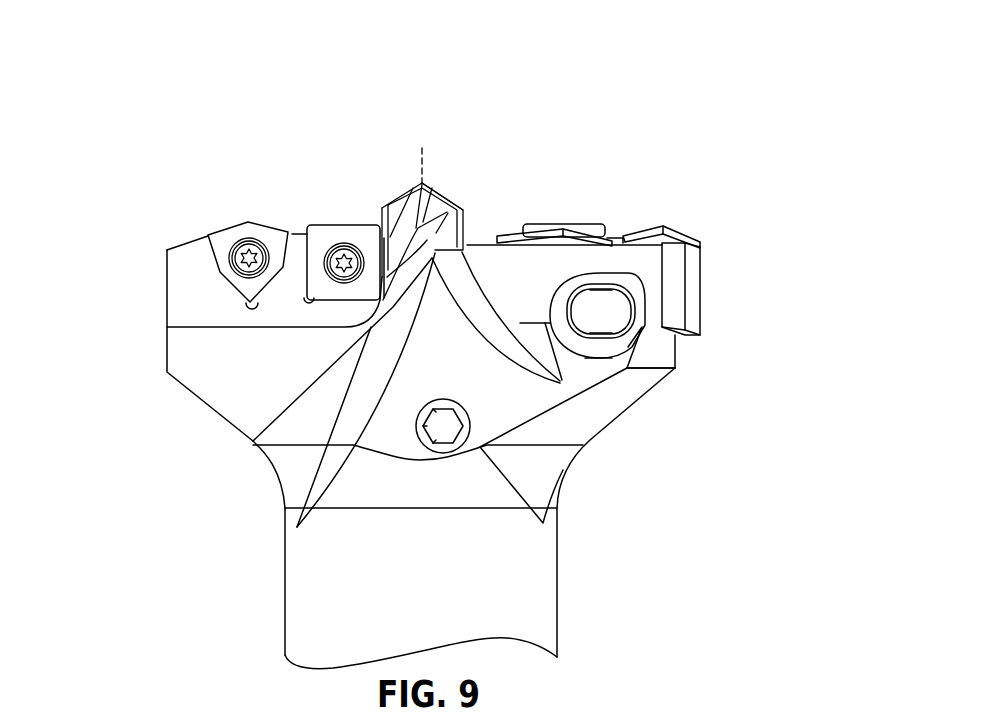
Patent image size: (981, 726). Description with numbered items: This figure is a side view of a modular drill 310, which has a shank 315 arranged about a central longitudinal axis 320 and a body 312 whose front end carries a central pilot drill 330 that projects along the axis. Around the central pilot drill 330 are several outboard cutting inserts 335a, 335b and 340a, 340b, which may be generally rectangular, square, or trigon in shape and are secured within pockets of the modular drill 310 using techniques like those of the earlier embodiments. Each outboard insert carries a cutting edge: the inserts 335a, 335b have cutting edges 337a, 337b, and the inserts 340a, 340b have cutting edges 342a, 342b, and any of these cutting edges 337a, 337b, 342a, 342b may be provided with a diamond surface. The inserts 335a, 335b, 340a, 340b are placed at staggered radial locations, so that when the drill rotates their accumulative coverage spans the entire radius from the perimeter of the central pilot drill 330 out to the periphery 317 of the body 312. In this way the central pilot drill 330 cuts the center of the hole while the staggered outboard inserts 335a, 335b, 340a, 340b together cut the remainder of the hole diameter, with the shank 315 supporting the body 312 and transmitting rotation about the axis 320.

The modular drill 310 is at (167, 203).
The body 312 is at (530, 556).
The shank 315 is at (333, 582).
The periphery 317 is at (665, 360).
The central longitudinal axis 320 is at (423, 165).
The central pilot drill 330 is at (443, 197).
The outboard insert 335a is at (233, 223).
The outboard insert 335b is at (322, 222).
The cutting edge 337a is at (272, 225).
The cutting edge 337b is at (362, 223).
The outboard insert 340a is at (545, 227).
The outboard insert 340b is at (635, 230).
The cutting edge 342a is at (585, 227).
The cutting edge 342b is at (683, 232).